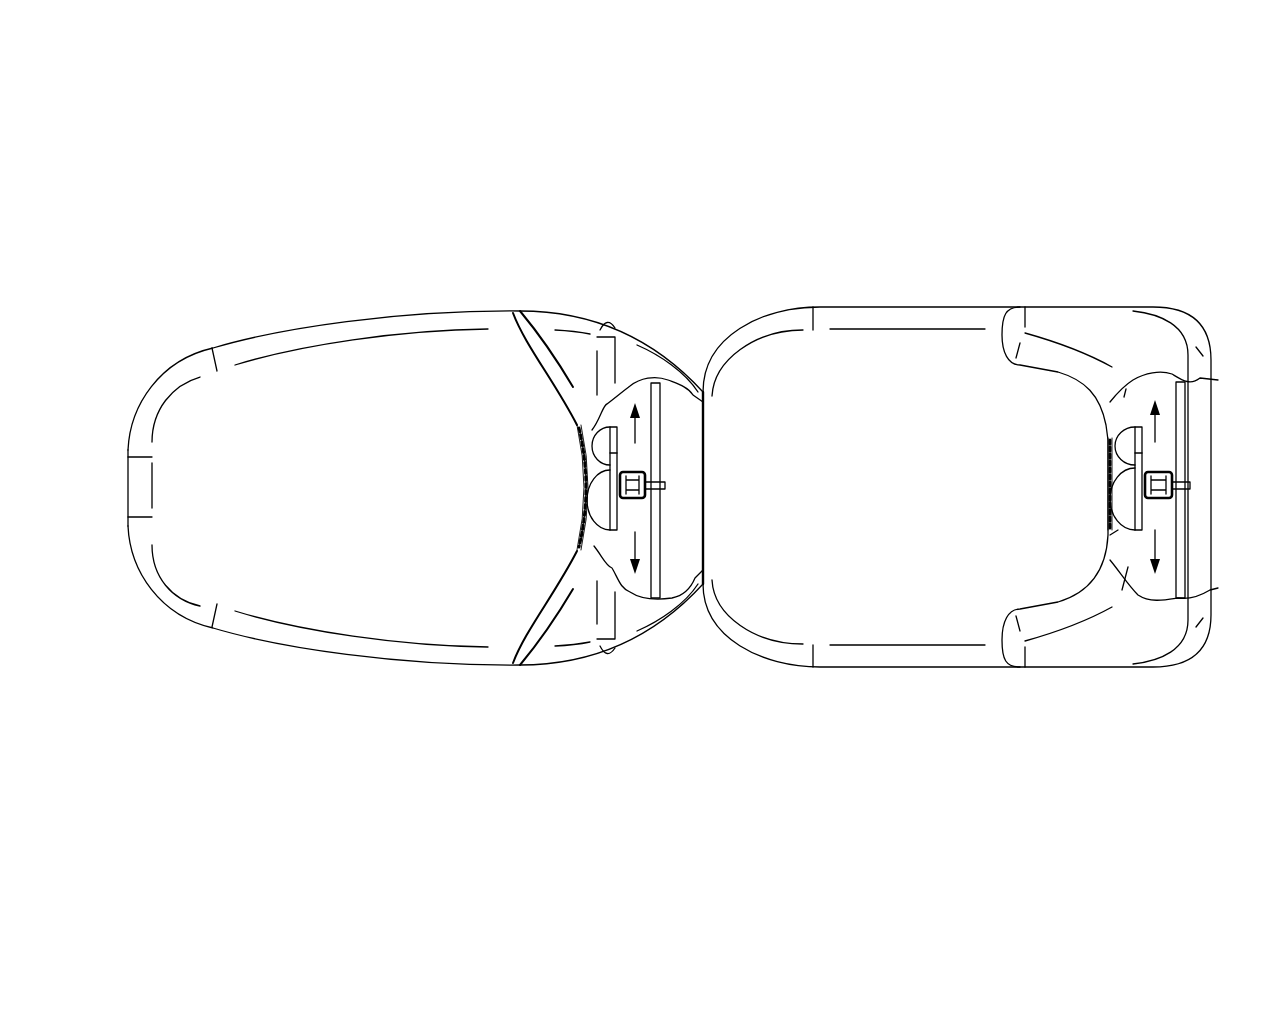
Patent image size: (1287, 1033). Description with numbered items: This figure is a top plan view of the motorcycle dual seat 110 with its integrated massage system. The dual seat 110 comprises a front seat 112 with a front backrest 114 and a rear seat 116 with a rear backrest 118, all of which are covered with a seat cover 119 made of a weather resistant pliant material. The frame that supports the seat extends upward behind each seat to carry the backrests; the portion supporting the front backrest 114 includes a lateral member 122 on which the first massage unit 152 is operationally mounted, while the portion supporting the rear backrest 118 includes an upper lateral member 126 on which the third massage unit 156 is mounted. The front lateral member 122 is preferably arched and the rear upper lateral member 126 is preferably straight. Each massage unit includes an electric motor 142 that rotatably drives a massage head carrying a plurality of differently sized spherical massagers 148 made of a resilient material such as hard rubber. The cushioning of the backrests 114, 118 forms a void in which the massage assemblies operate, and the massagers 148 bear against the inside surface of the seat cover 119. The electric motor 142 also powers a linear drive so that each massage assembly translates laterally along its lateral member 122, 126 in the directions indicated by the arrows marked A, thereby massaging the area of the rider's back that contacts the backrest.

The dual seat 110 is at (1093, 113).
The front seat 112 is at (385, 311).
The front backrest 114 is at (540, 353).
The rear seat 116 is at (920, 307).
The rear backrest 118 is at (1033, 378).
The seat cover 119 is at (586, 471).
The lateral member 122 is at (662, 428).
The upper lateral member 126 is at (1160, 378).
The electric motor 142 is at (652, 507).
The massagers 148 is at (577, 549).
The first massage unit 152 is at (594, 421).
The third massage unit 156 is at (1116, 538).